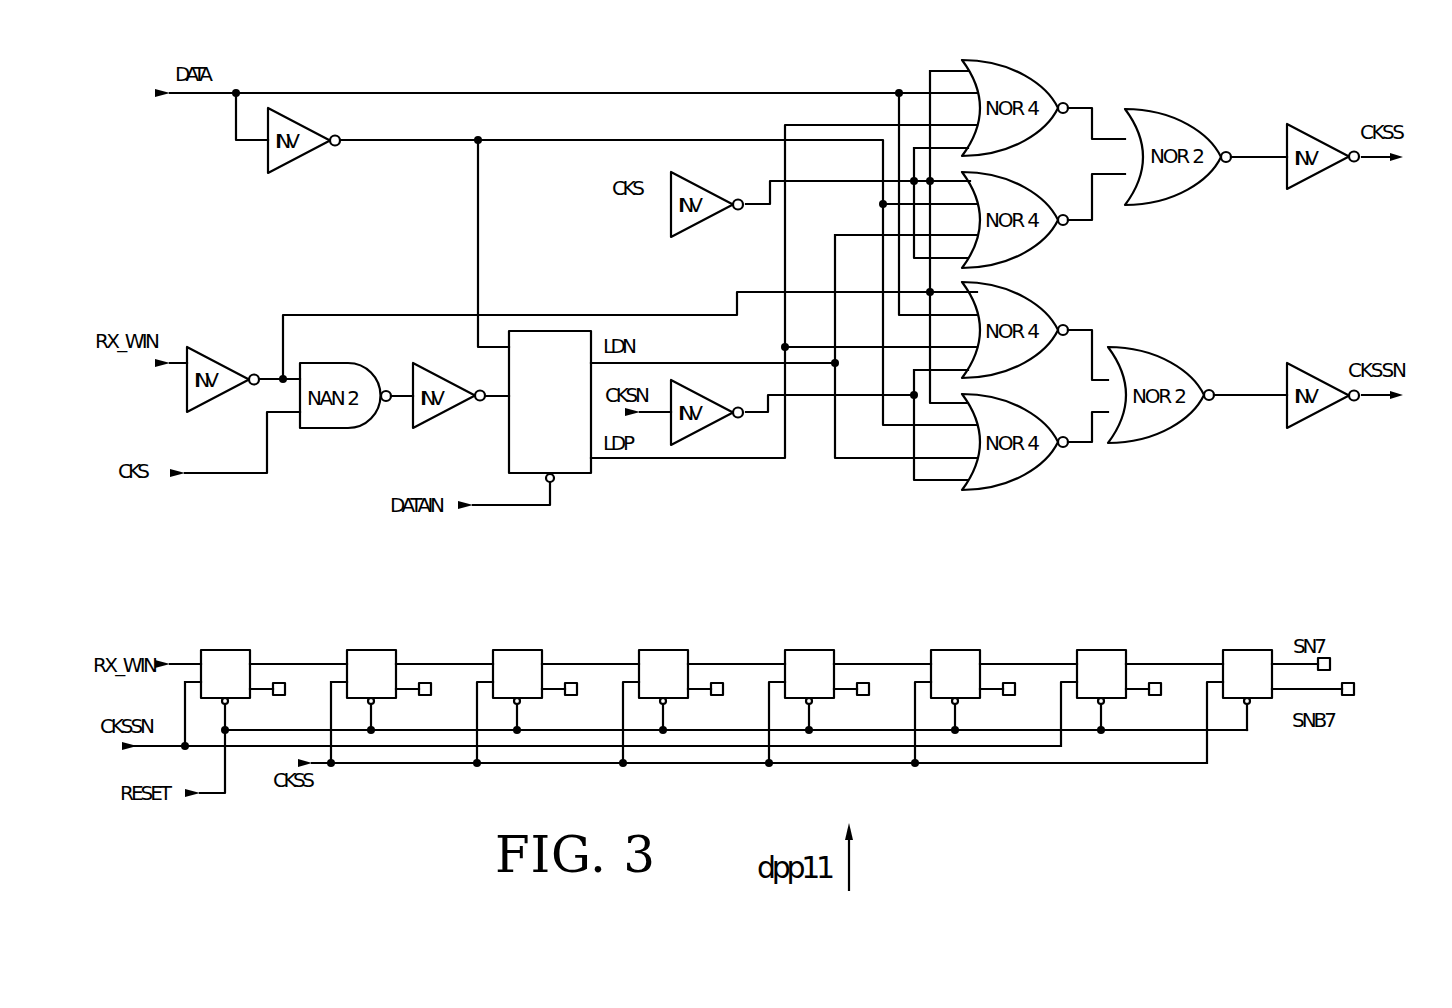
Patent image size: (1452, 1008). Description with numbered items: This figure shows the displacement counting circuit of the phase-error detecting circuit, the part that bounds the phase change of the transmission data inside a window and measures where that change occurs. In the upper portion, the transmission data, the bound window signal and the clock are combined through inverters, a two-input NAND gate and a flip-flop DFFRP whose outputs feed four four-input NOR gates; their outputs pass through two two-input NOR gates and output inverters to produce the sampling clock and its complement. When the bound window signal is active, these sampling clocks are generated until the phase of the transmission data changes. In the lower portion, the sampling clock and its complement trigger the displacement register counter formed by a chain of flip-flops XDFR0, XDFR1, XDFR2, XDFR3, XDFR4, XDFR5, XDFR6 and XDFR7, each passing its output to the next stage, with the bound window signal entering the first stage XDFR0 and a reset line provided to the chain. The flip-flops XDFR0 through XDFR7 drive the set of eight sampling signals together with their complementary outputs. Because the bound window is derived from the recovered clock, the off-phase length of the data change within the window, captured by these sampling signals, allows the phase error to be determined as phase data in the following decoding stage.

The flip-flop XDFR0 is at (250, 673).
The flip-flop XDFR1 is at (396, 673).
The flip-flop XDFR2 is at (542, 673).
The flip-flop XDFR3 is at (688, 673).
The flip-flop XDFR4 is at (834, 673).
The flip-flop XDFR5 is at (980, 673).
The flip-flop XDFR6 is at (1126, 673).
The flip-flop XDFR7 is at (1248, 673).
The D flip-flop with reset and preset DFFRP is at (550, 406).